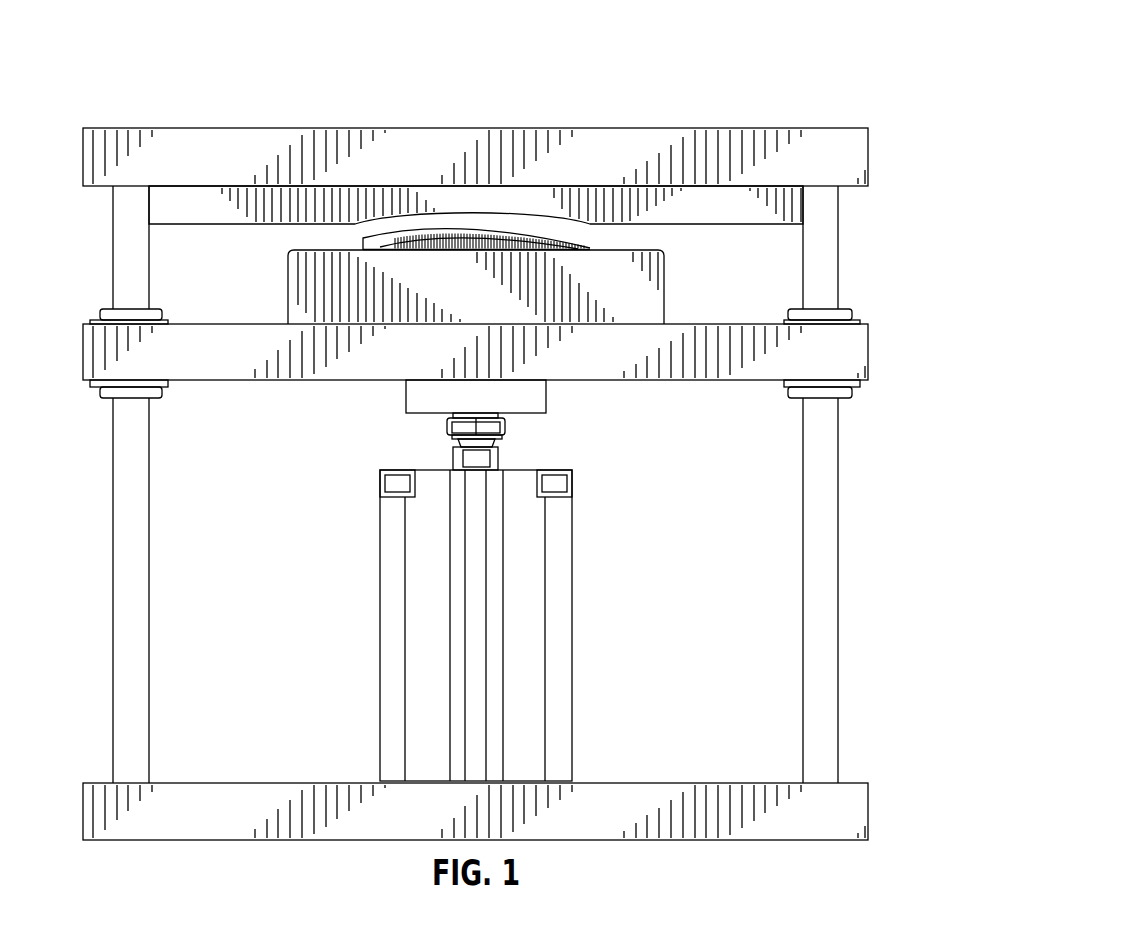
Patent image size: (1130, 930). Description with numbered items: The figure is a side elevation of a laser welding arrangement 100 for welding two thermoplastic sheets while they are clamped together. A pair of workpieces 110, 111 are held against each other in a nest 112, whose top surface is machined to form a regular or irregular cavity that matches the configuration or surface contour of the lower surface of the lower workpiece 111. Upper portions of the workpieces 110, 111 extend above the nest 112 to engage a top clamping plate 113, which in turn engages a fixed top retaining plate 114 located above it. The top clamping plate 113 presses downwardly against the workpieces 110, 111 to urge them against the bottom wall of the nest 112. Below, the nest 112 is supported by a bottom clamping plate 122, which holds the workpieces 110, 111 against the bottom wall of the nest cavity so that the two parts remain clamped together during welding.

The laser welding arrangement 100 is at (997, 102).
The fixed top retaining plate 114 is at (857, 161).
The top clamping plate 113 is at (742, 208).
The upper workpiece 110 is at (590, 241).
The lower workpiece 111 is at (447, 247).
The nest 112 is at (643, 292).
The bottom clamping plate 122 is at (857, 355).